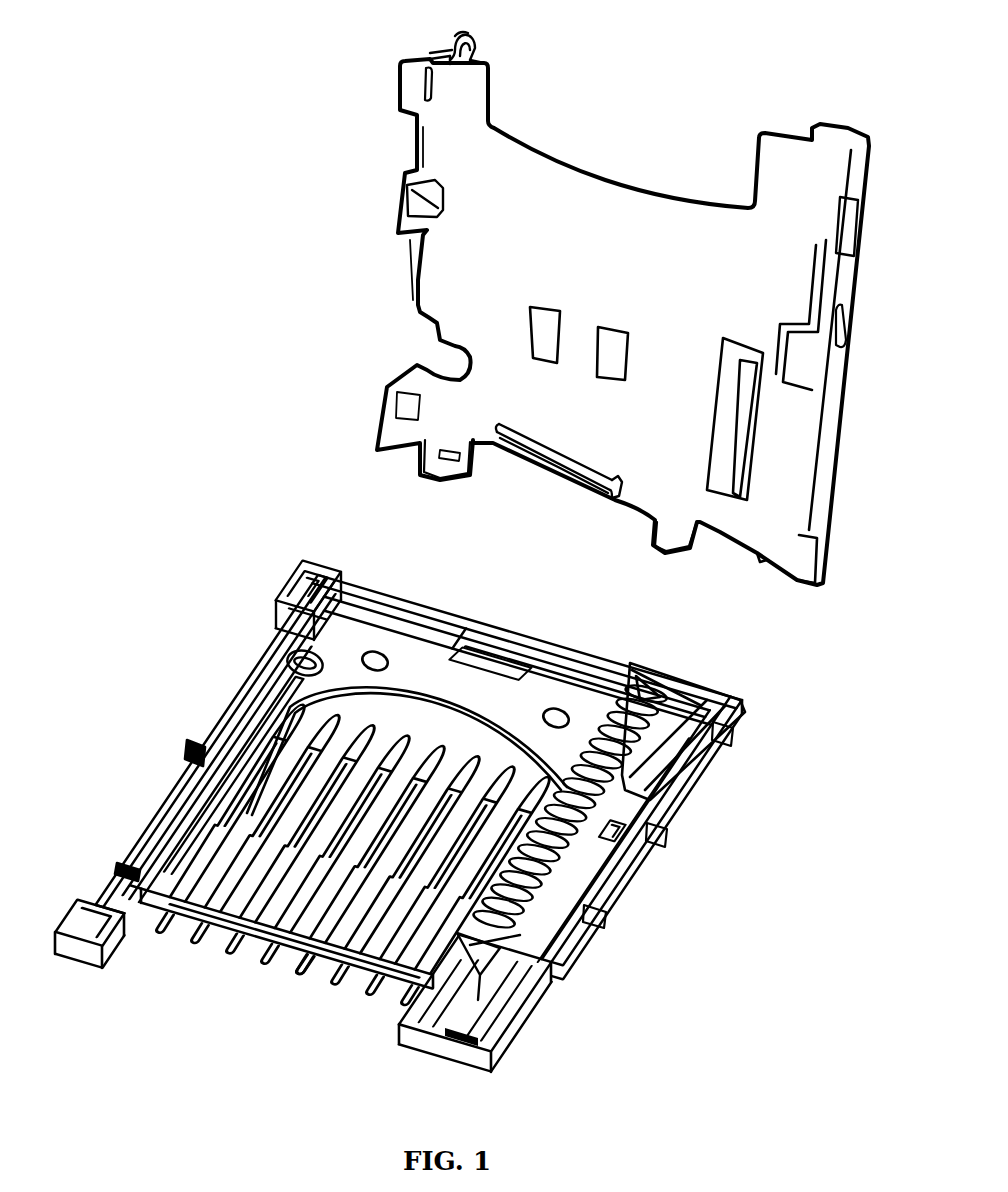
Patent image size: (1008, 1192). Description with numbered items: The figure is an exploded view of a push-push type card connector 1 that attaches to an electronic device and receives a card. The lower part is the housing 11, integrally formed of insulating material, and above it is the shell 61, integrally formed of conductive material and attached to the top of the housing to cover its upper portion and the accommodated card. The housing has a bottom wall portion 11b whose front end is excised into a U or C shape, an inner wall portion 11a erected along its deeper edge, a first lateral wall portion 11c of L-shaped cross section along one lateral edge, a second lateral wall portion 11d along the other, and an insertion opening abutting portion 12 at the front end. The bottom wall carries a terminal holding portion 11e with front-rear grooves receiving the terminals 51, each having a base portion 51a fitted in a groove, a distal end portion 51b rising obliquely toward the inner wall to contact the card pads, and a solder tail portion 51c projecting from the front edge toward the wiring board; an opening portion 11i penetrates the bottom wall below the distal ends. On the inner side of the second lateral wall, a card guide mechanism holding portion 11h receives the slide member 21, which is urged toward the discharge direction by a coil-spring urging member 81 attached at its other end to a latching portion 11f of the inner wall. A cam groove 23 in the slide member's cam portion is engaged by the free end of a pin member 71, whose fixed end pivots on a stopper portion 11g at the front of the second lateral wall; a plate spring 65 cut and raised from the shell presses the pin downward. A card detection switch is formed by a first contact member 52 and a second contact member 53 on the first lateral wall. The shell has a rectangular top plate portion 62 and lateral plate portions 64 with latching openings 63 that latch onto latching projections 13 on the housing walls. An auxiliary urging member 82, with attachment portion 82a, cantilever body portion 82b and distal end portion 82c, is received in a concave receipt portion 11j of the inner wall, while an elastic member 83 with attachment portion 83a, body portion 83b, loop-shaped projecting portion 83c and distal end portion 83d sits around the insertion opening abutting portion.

The card connector 1 is at (131, 347).
The housing 11 is at (745, 705).
The inner wall portion 11a is at (412, 620).
The bottom wall portion 11b is at (512, 668).
The first lateral wall portion 11c is at (236, 697).
The second lateral wall portion 11d is at (690, 793).
The terminal holding portion 11e is at (255, 922).
The latching portion 11f is at (687, 687).
The stopper portion 11g is at (508, 1032).
The card guide mechanism holding portion 11h is at (630, 810).
The opening portion 11i is at (470, 652).
The concave receipt portion 11j is at (460, 635).
The insertion opening abutting portion 12 is at (80, 913).
The latching projections 13 is at (722, 735).
The slide member 21 is at (465, 1003).
The cam groove 23 is at (615, 847).
The terminals 51 is at (188, 890).
The base portions 51a is at (320, 935).
The distal end portions 51b is at (452, 768).
The solder tail portions 51c is at (338, 975).
The first contact member 52 is at (350, 625).
The second contact member 53 is at (278, 652).
The shell 61 is at (578, 163).
The top plate portion 62 is at (612, 208).
The latching openings 63 is at (420, 90).
The lateral plate portions 64 is at (400, 235).
The plate spring 65 is at (800, 380).
The pin member 71 is at (545, 955).
The urging member 81 is at (648, 700).
The auxiliary urging member 82 is at (530, 437).
The attachment portion 82a is at (652, 505).
The body portion 82b is at (557, 467).
The distal end portion 82c is at (505, 423).
The elastic member 83 is at (476, 40).
The attachment portion 83a is at (430, 57).
The body portion 83b is at (450, 65).
The projecting portion 83c is at (475, 58).
The distal end portion 83d is at (455, 42).